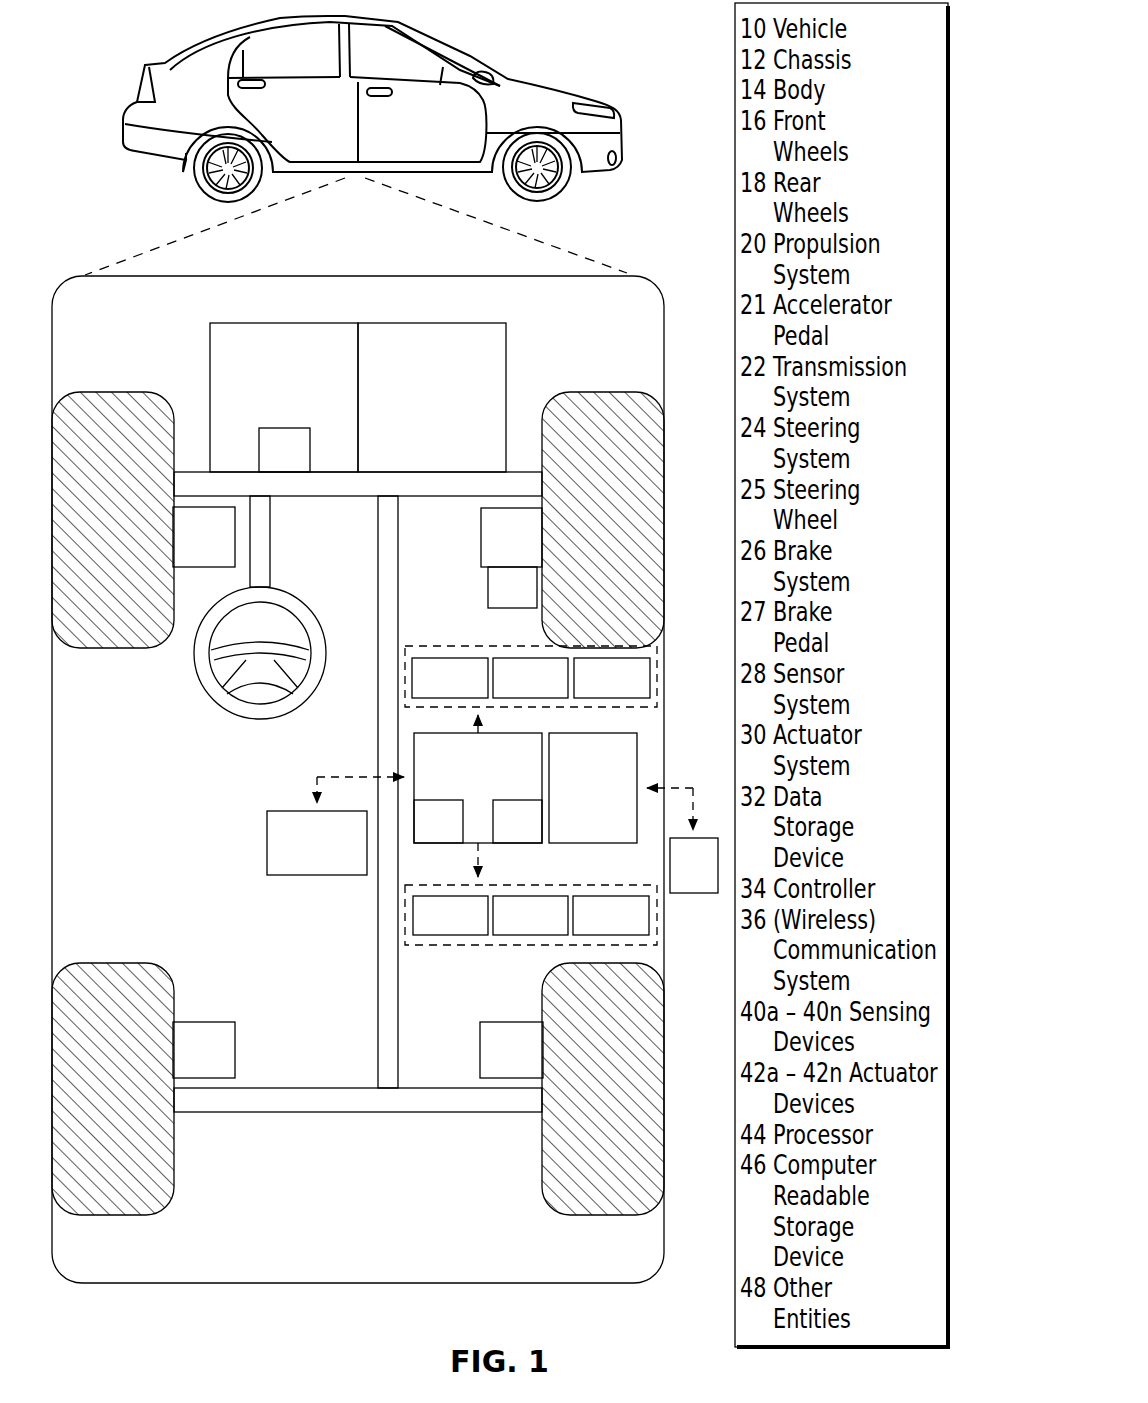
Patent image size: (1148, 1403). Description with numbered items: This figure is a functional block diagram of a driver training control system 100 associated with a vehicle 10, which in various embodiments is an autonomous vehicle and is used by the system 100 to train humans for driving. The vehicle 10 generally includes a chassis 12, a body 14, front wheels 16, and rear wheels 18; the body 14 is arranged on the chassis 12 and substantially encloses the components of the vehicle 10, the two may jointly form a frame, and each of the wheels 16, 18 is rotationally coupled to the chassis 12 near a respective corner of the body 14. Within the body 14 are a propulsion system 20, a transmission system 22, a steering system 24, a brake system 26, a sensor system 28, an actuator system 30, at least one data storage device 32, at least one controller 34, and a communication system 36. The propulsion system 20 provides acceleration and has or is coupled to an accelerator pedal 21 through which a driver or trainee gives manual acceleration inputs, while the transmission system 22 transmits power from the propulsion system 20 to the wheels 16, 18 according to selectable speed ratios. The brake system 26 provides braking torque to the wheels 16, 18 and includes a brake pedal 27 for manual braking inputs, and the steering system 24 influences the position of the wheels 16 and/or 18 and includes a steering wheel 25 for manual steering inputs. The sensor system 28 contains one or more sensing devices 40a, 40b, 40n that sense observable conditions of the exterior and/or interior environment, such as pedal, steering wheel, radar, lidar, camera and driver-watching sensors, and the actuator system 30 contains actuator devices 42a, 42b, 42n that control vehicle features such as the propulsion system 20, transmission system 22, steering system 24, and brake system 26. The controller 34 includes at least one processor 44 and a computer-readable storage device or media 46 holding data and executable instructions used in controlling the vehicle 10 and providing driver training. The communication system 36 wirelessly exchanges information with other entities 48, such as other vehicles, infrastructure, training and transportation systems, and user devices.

The vehicle 10 is at (132, 98).
The chassis 12 is at (408, 1113).
The body 14 is at (666, 381).
The front wheels 16 is at (112, 392).
The rear wheels 18 is at (112, 1215).
The propulsion system 20 is at (284, 397).
The accelerator pedal 21 is at (284, 450).
The transmission system 22 is at (432, 397).
The steering system 24 is at (280, 562).
The steering wheel 25 is at (216, 702).
The brake system 26 is at (358, 792).
The brake pedal 27 is at (512, 587).
The sensor system 28 is at (490, 645).
The actuator system 30 is at (495, 947).
The data storage device 32 is at (317, 843).
The controller 34 is at (478, 788).
The communication system 36 is at (593, 788).
The sensing device 40a is at (450, 678).
The sensing device 40b is at (530, 678).
The sensing device 40n is at (612, 678).
The actuator device 42a is at (450, 915).
The actuator device 42b is at (530, 915).
The actuator device 42n is at (611, 915).
The processor 44 is at (438, 821).
The computer-readable storage device or media 46 is at (517, 821).
The other entities 48 is at (694, 865).
The driver training control system 100 is at (643, 261).